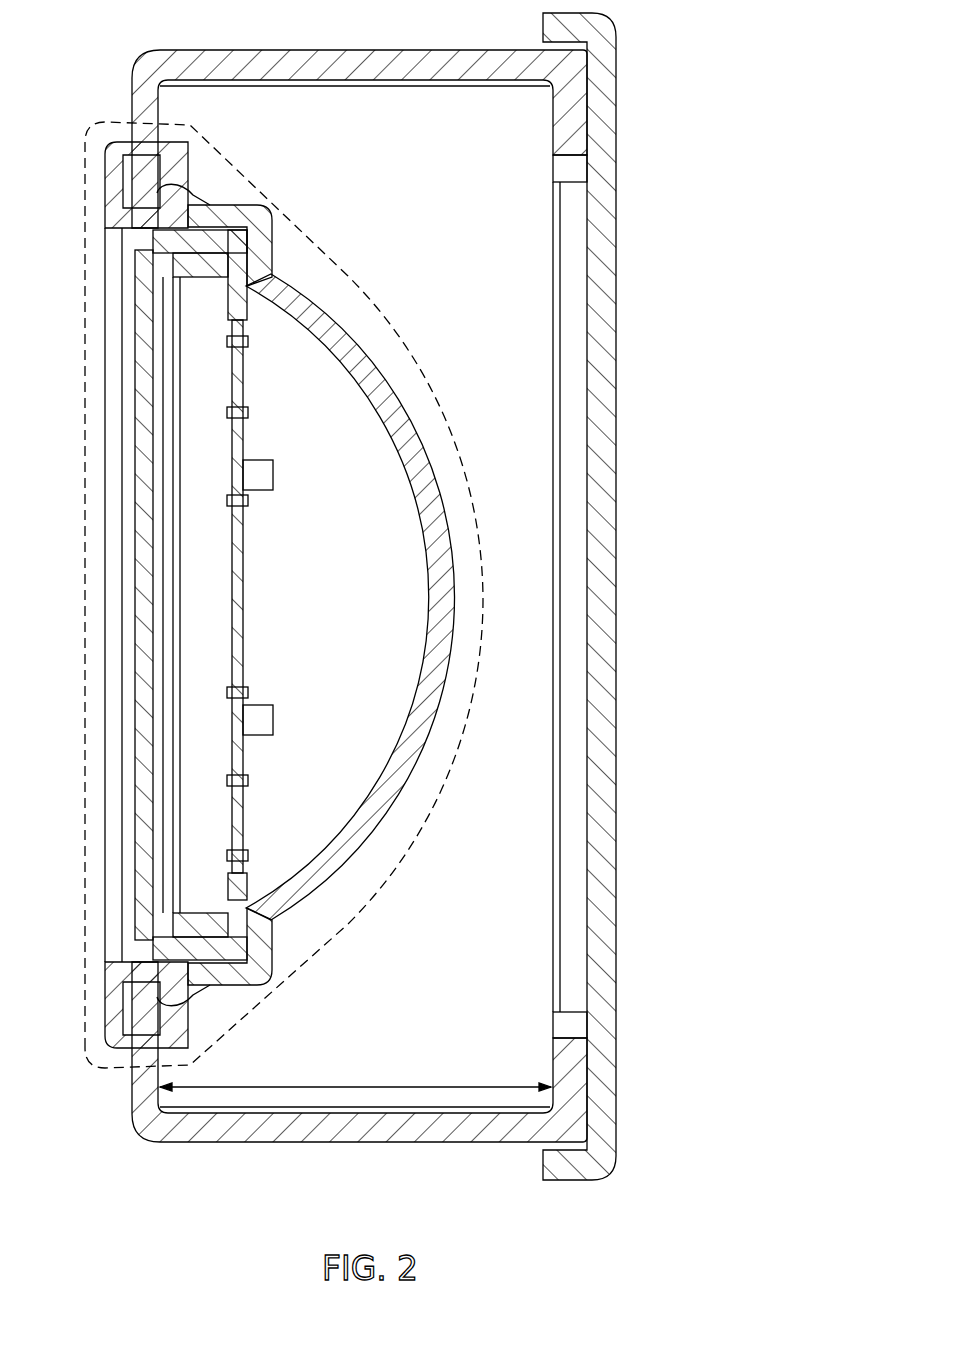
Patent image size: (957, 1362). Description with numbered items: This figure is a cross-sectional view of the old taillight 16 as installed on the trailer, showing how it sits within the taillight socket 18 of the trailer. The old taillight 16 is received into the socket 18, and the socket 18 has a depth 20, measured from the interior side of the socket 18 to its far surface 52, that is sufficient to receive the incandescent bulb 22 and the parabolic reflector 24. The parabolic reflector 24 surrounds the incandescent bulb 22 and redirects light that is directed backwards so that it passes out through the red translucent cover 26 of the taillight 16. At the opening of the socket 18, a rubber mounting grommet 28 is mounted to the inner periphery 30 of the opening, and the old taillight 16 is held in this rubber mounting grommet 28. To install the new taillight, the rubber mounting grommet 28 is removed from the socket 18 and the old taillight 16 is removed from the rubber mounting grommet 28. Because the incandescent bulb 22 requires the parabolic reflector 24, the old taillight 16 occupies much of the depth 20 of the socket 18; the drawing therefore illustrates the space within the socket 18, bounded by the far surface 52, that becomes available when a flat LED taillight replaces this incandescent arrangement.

The old taillight 16 is at (85, 333).
The taillight socket 18 is at (352, 100).
The depth 20 is at (366, 1086).
The incandescent bulb 22 is at (392, 550).
The parabolic reflector 24 is at (447, 613).
The red translucent cover 26 is at (148, 398).
The rubber mounting grommet 28 is at (187, 198).
The inner periphery 30 is at (138, 205).
The far surface 52 is at (556, 786).